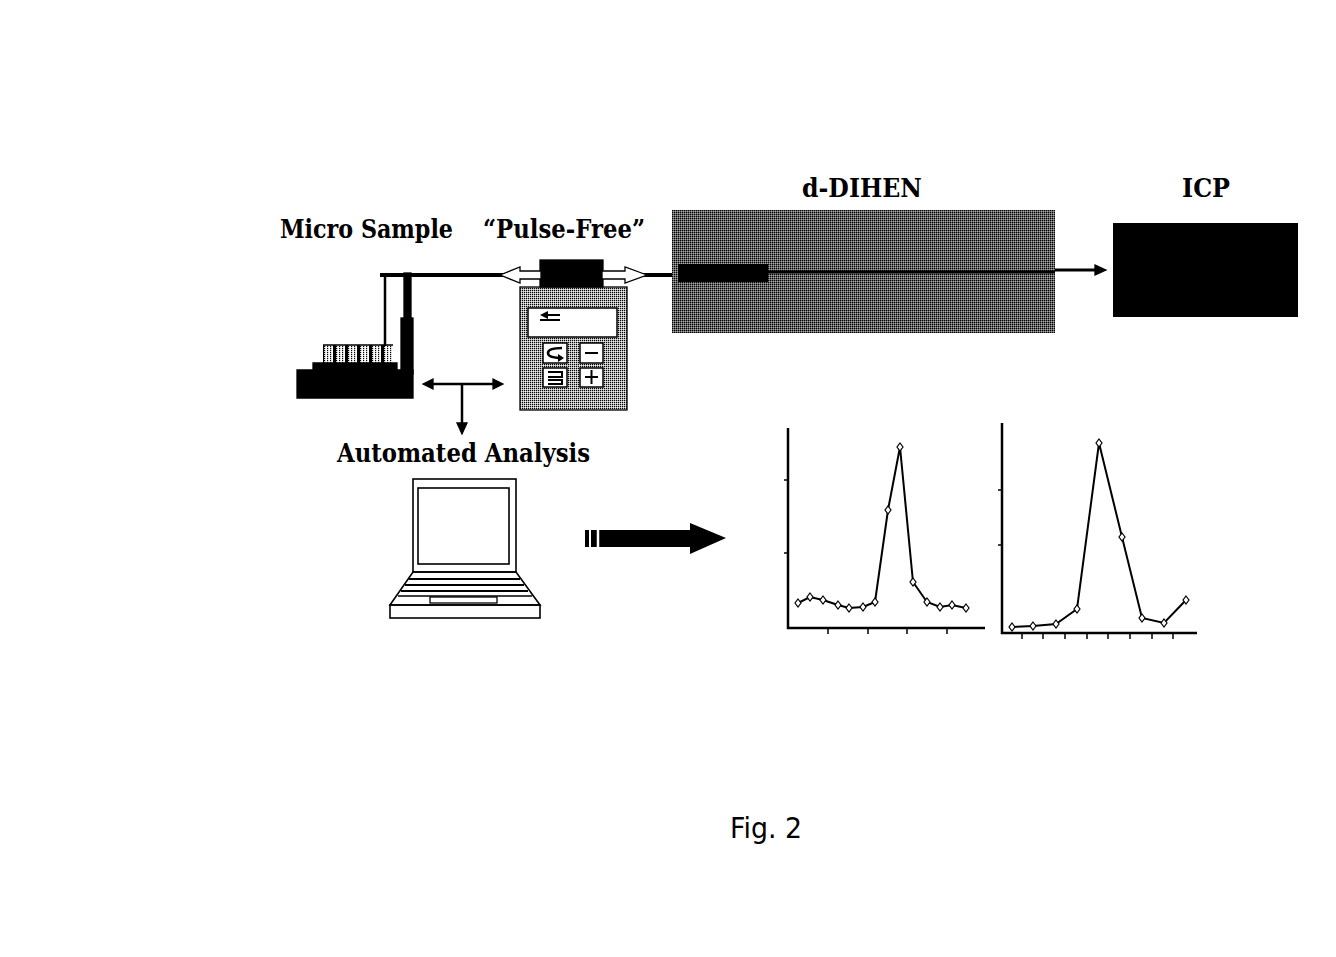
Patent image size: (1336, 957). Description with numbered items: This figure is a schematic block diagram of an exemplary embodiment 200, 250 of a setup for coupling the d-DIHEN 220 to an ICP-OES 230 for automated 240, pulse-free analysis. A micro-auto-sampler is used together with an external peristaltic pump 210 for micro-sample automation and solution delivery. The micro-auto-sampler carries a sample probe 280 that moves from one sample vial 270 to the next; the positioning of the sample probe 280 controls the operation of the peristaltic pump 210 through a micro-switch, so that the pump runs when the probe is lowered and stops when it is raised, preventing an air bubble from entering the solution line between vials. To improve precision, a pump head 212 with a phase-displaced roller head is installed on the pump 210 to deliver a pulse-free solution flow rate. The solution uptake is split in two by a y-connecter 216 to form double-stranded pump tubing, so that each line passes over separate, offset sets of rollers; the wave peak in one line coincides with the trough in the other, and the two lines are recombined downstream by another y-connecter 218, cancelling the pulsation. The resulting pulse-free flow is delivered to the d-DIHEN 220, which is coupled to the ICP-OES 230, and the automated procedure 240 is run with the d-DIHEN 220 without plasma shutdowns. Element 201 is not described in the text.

The exemplary embodiment 200 is at (235, 74).
The micro sample autosampler 201 is at (345, 405).
The sample vial 270 is at (327, 345).
The sample probe 280 is at (373, 298).
The peristaltic pump 210 is at (522, 382).
The pump head 212 is at (570, 262).
The y-connecter 216 is at (497, 270).
The y-connecter 218 is at (632, 270).
The d-DIHEN 220 is at (870, 175).
The ICP-OES 230 is at (1185, 160).
The automated analysis 240 is at (377, 592).
The exemplary embodiment 250 is at (977, 658).